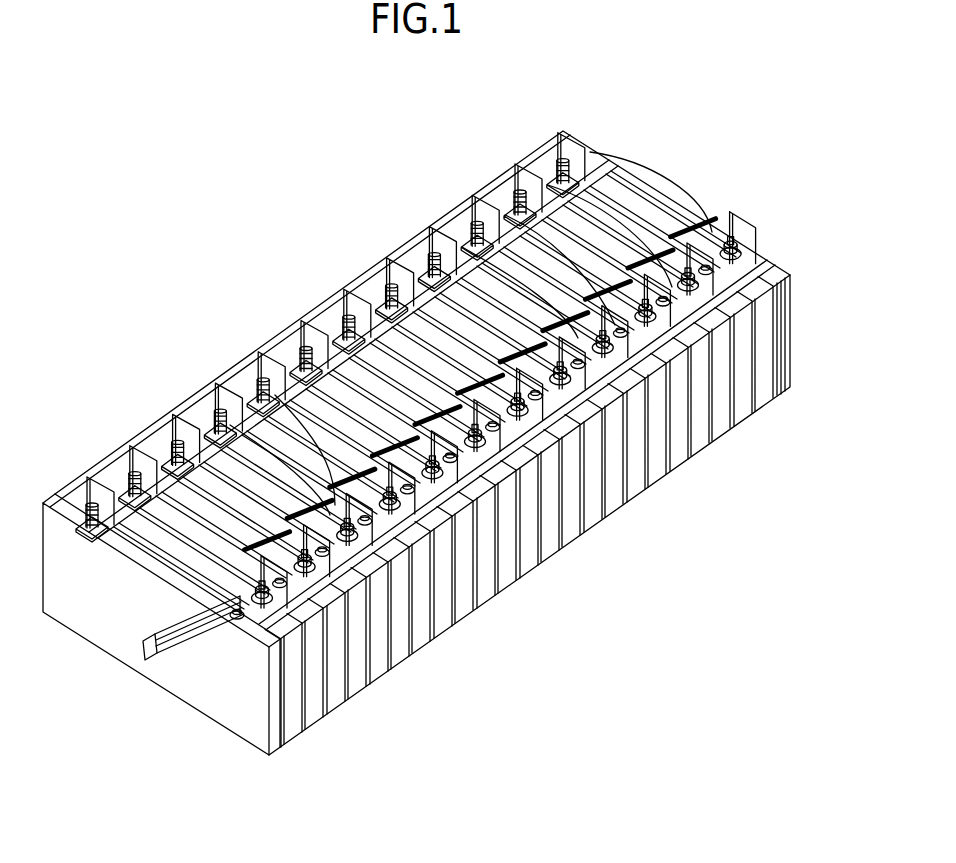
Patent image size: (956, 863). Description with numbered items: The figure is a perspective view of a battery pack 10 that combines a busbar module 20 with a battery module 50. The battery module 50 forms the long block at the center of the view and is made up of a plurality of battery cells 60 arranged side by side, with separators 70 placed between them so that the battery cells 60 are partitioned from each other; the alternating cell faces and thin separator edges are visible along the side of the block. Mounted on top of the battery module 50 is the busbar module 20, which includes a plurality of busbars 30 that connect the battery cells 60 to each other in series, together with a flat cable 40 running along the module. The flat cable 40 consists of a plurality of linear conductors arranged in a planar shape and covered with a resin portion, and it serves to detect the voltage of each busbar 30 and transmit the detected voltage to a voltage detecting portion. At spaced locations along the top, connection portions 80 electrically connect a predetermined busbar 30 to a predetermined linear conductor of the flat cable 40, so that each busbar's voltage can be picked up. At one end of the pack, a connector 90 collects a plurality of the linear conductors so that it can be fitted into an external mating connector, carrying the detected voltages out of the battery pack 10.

The battery pack 10 is at (247, 178).
The busbar module 20 is at (204, 636).
The busbar 30 is at (343, 607).
The flat cable 40 is at (210, 420).
The battery module 50 is at (529, 584).
The battery cell 60 is at (297, 430).
The separator 70 is at (315, 717).
The connection portion 80 is at (415, 232).
The connector 90 is at (143, 645).